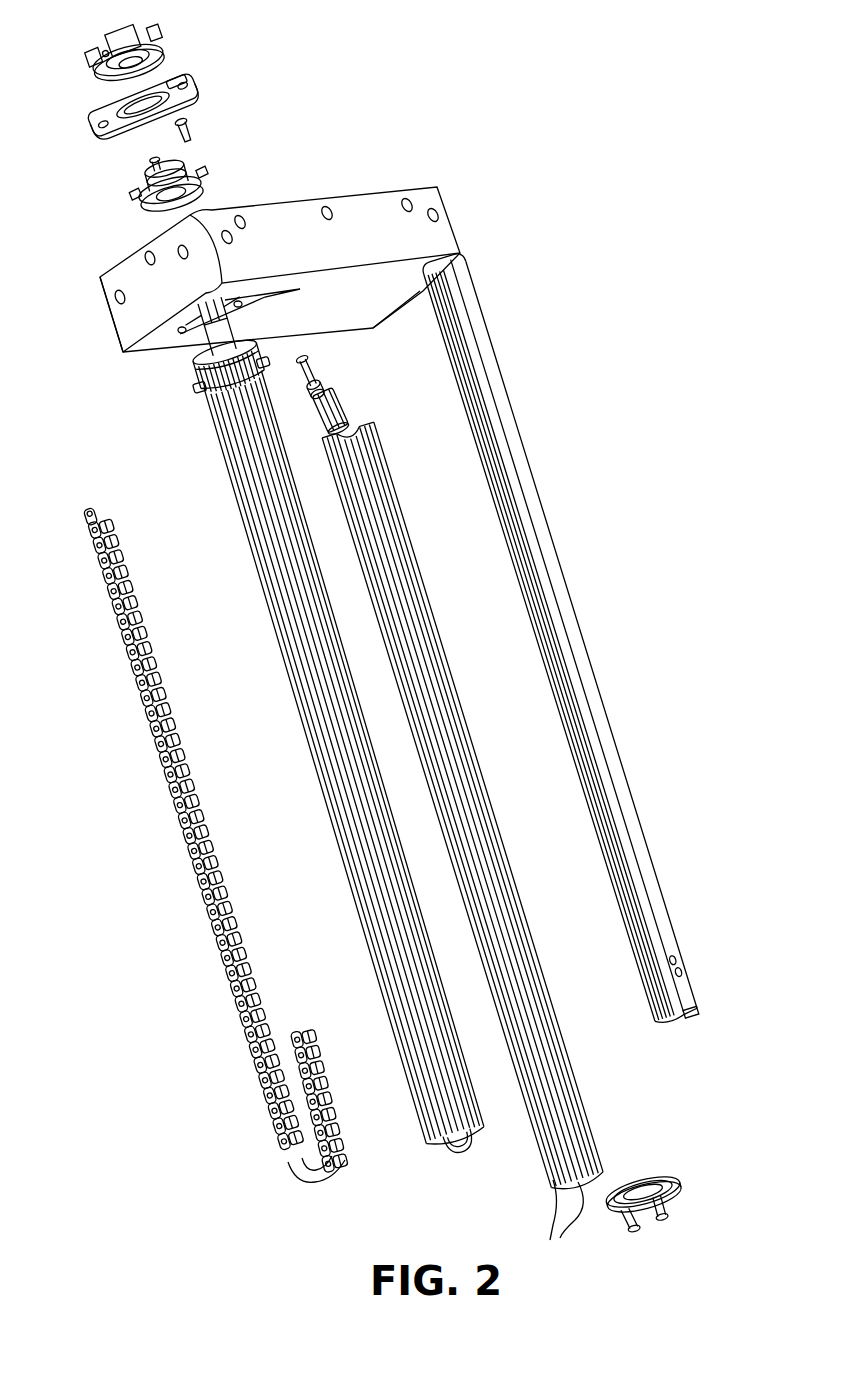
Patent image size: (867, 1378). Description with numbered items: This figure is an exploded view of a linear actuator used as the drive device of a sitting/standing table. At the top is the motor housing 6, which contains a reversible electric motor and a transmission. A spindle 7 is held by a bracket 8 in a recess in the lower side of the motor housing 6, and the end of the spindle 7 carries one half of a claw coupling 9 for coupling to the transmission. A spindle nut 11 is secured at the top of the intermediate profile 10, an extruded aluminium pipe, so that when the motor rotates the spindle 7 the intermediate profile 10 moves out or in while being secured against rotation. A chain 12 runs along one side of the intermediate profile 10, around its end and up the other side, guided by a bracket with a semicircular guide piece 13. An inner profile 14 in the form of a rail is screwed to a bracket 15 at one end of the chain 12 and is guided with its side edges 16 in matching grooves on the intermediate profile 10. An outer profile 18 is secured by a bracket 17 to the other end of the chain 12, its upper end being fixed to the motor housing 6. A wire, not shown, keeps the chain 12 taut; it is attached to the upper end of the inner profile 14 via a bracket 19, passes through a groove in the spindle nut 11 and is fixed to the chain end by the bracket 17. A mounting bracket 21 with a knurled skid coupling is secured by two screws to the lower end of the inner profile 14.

The motor housing 6 is at (360, 207).
The spindle 7 is at (192, 336).
The bracket 8 is at (200, 65).
The claw coupling 9 is at (157, 43).
The intermediate profile 10 is at (272, 558).
The spindle nut 11 is at (200, 383).
The chain 12 is at (193, 856).
The semicircular guide piece 13 is at (463, 1142).
The inner profile 14 is at (548, 1168).
The bracket 15 is at (97, 527).
The side edges 16 is at (566, 1223).
The bracket 17 is at (308, 1032).
The outer profile 18 is at (634, 820).
The bracket 19 is at (343, 390).
The mounting bracket 21 is at (678, 1192).